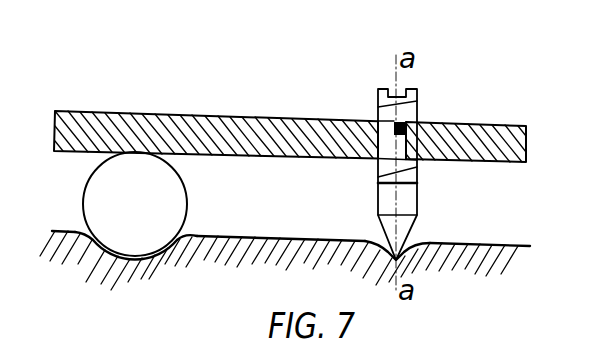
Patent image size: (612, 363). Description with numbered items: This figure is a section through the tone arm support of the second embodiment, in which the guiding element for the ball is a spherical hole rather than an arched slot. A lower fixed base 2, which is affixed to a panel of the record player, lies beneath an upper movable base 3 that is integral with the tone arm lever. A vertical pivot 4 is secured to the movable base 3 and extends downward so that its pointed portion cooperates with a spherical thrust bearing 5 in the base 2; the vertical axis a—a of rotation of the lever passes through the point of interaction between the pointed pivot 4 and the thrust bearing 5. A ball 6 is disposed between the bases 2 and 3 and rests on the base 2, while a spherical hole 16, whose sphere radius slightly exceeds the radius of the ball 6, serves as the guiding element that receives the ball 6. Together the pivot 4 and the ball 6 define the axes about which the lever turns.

The lower fixed base 2 is at (72, 234).
The upper movable base 3 is at (215, 131).
The vertical pivot 4 is at (402, 114).
The thrust bearing 5 is at (412, 262).
The ball 6 is at (175, 192).
The spherical hole 16 is at (104, 250).